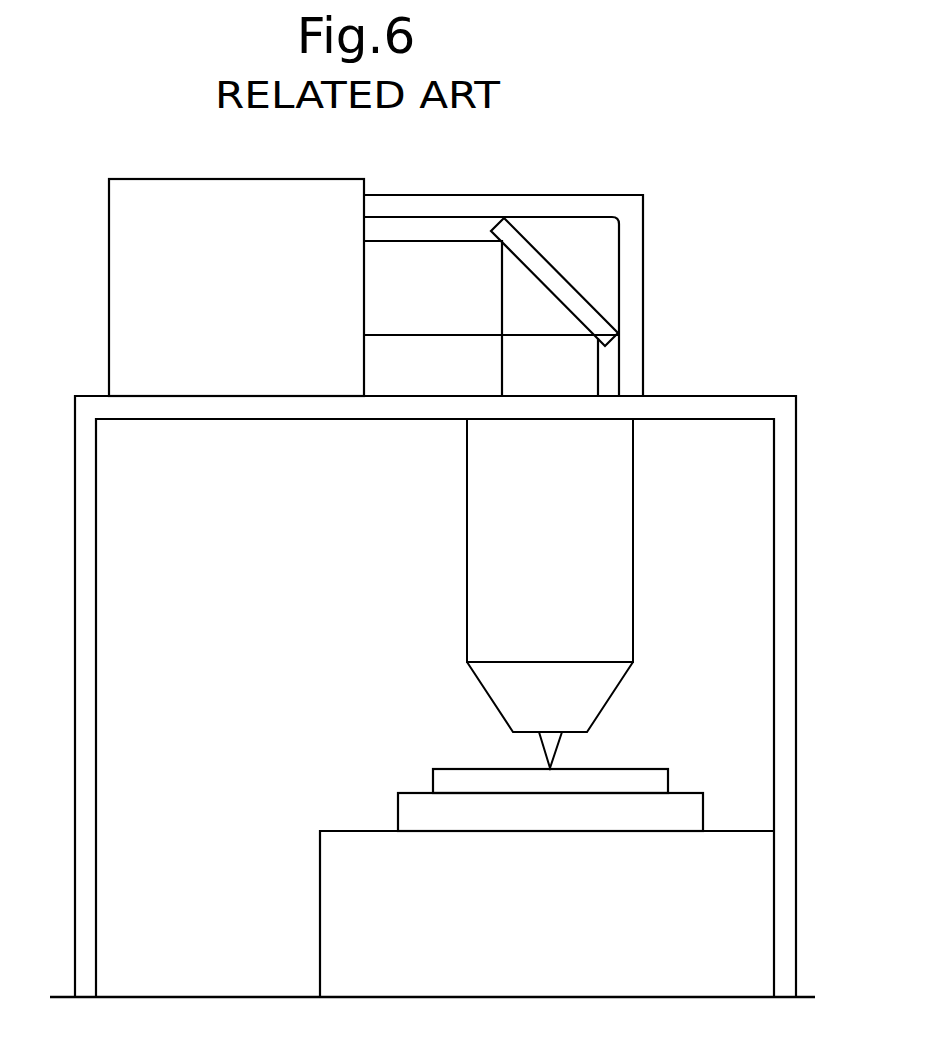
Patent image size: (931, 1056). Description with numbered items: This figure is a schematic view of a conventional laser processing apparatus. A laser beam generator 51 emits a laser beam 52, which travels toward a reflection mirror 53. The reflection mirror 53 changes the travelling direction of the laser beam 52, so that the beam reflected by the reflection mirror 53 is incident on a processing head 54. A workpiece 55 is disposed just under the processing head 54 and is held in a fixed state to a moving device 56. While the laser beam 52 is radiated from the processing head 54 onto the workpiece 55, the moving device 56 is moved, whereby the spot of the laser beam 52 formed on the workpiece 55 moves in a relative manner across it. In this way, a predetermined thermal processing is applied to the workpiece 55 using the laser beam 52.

The laser beam generator 51 is at (222, 213).
The laser beam 52 is at (431, 332).
The reflection mirror 53 is at (565, 291).
The processing head 54 is at (508, 591).
The workpiece 55 is at (442, 767).
The moving device 56 is at (328, 811).